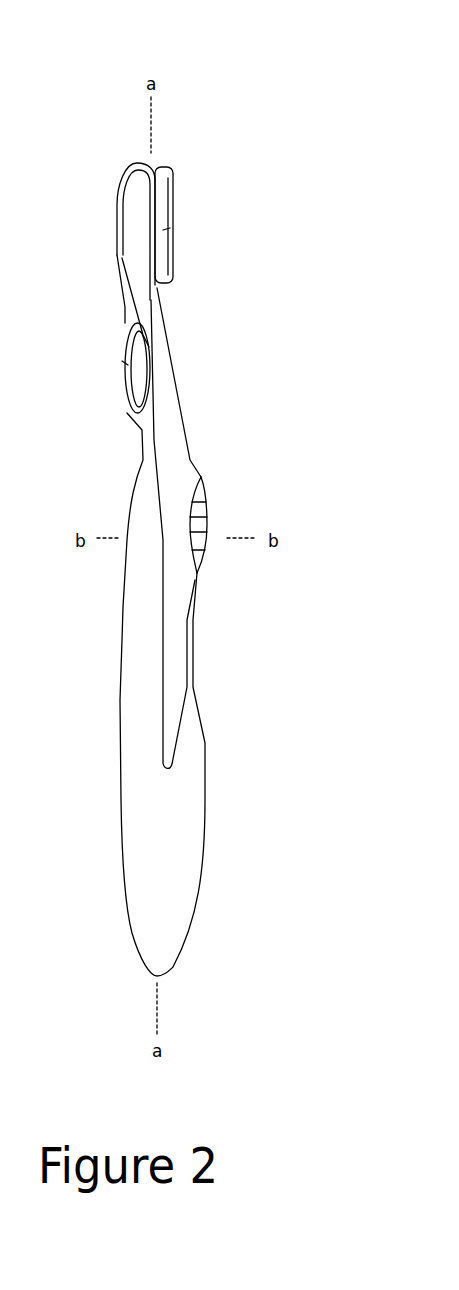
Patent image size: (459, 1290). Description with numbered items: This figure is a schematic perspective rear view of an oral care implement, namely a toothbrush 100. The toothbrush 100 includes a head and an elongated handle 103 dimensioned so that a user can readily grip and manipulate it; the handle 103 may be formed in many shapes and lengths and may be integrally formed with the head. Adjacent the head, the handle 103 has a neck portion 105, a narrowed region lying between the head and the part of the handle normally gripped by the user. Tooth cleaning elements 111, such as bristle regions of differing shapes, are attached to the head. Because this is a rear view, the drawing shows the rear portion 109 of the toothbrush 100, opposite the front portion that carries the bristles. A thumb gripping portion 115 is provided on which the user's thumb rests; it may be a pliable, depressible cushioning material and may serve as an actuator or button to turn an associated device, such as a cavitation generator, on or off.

The oral care implement 100 is at (104, 80).
The handle 103 is at (128, 688).
The neck portion 105 is at (128, 308).
The rear portion 109 is at (128, 203).
The tooth cleaning elements 111 is at (172, 248).
The thumb gripping portion 115 is at (207, 502).